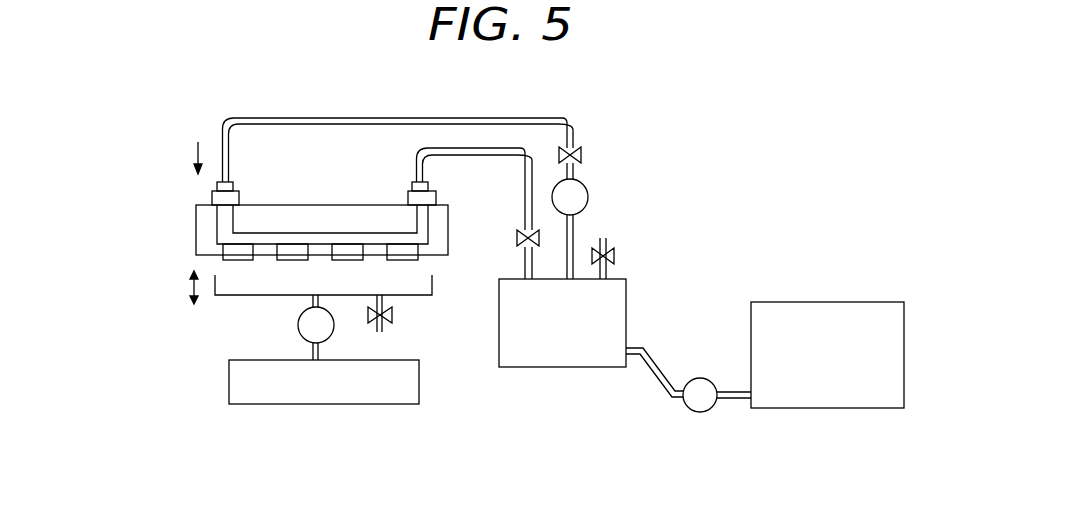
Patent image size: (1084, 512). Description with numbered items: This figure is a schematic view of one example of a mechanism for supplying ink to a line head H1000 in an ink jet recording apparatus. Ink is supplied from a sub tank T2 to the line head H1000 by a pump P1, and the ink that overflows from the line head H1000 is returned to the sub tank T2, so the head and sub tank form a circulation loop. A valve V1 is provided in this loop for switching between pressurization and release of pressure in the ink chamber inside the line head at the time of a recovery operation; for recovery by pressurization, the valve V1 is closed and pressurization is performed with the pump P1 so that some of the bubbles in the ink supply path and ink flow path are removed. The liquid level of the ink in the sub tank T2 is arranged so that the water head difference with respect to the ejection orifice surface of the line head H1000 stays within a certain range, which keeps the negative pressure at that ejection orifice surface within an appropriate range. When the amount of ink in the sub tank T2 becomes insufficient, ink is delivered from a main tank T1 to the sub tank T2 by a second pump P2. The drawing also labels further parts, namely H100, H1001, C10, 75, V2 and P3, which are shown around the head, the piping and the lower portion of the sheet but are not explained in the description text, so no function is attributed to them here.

The line head H1000 is at (326, 186).
The liquid ejection head H100 is at (237, 250).
The ejection port surface H1001 is at (400, 261).
The cap C10 is at (232, 295).
The waste liquid tank 75 is at (312, 393).
The valve V1 is at (542, 238).
The valve V2 is at (584, 154).
The pump P1 is at (570, 197).
The pump P2 is at (688, 380).
The pump P3 is at (316, 327).
The main tank T1 is at (800, 308).
The sub tank T2 is at (569, 350).